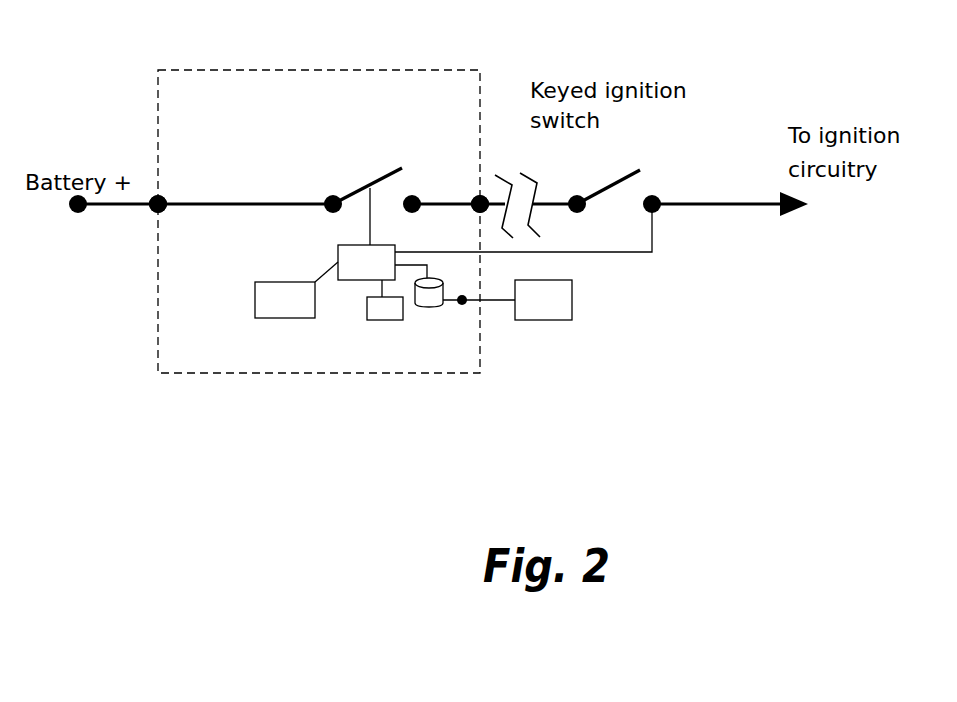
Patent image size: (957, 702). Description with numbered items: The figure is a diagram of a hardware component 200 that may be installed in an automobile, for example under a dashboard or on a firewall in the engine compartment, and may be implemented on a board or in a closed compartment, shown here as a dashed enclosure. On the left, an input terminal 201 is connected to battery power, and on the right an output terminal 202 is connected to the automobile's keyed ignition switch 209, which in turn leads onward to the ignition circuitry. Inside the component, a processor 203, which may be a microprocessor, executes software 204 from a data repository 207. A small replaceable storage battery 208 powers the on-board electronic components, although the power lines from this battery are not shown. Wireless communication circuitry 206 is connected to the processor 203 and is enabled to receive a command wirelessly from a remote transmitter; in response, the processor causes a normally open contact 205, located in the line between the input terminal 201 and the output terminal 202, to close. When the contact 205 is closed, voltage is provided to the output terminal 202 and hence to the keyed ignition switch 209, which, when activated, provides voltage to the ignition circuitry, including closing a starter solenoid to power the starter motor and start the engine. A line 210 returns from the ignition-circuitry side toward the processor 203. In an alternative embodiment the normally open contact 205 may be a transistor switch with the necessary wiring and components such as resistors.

The hardware component 200 is at (305, 68).
The input terminal 201 is at (158, 197).
The output terminal 202 is at (480, 197).
The processor 203 is at (355, 245).
The software 204 is at (268, 282).
The normally open contact 205 is at (356, 162).
The wireless communication circuitry 206 is at (367, 305).
The data repository 207 is at (427, 298).
The storage battery 208 is at (573, 292).
The keyed ignition switch 209 is at (616, 166).
The feedback line from ignition circuitry 210 is at (595, 252).